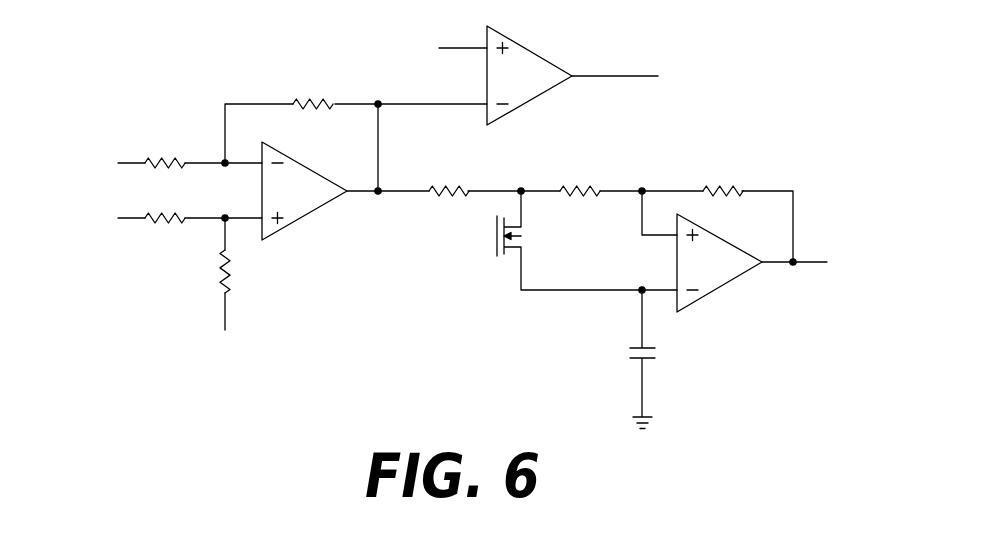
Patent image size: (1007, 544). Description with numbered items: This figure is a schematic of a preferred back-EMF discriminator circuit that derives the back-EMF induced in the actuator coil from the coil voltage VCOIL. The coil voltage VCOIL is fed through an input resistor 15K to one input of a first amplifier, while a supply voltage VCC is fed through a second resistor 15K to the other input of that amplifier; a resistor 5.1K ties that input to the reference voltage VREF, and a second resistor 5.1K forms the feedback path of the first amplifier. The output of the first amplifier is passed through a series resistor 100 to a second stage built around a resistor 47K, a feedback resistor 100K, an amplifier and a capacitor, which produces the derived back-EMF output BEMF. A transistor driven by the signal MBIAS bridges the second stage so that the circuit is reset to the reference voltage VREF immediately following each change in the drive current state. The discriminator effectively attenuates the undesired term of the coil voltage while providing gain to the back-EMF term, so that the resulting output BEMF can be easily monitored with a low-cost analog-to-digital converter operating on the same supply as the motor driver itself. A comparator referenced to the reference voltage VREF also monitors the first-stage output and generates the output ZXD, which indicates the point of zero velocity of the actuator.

The coil voltage VCOIL is at (152, 161).
The supply voltage input VCC is at (162, 213).
The 15 kOhm input resistors 15K is at (165, 173).
The 5.1 kOhm resistors 5.1K is at (353, 198).
The reference voltage VREF is at (339, 196).
The comparator output ZXD is at (637, 76).
The 100 Ohm resistor 100 is at (494, 171).
The 47 kOhm resistor 47K is at (631, 171).
The 100 kOhm feedback resistor 100K is at (744, 204).
The back-EMF signal BEMF is at (827, 261).
The reset signal MBIAS is at (497, 236).